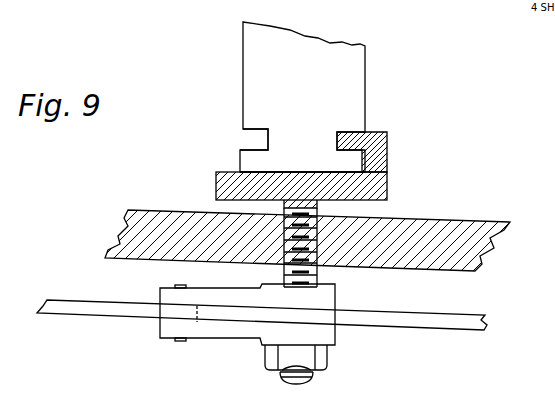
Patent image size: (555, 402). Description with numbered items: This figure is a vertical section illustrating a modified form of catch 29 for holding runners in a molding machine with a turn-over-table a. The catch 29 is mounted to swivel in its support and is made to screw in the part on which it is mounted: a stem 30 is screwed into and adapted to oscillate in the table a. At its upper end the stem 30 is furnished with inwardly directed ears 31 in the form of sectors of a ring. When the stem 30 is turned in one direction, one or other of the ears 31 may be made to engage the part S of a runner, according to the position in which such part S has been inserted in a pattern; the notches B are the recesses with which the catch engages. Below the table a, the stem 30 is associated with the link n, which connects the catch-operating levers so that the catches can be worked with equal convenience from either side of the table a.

The part of a runner S is at (302, 97).
The notches B is at (240, 143).
The inwardly directed ears 31 is at (390, 145).
The catch 29 is at (389, 176).
The stem 30 is at (320, 280).
The turn-over-table a is at (501, 246).
The link n is at (488, 322).